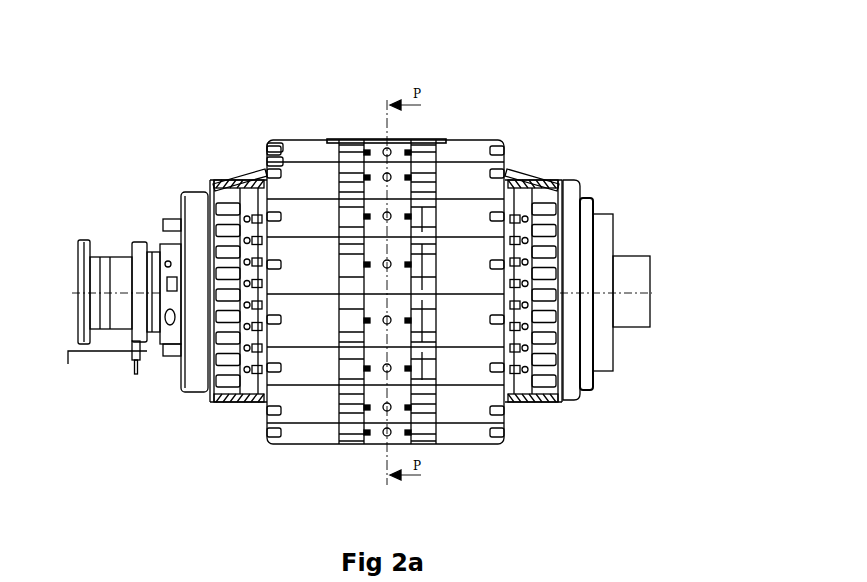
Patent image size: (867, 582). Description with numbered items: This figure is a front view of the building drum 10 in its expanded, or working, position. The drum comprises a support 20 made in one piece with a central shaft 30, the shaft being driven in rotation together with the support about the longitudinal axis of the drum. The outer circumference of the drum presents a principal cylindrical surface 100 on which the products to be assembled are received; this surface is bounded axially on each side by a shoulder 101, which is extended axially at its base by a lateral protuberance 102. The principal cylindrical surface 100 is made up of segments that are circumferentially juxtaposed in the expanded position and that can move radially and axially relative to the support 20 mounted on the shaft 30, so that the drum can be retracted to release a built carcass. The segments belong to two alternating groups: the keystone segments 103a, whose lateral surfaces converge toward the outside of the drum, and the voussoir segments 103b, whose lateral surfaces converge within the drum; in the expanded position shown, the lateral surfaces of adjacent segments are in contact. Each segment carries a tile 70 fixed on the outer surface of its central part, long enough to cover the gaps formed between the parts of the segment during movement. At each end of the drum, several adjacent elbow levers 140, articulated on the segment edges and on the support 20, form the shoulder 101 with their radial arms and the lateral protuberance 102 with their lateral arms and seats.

The building drum 10 is at (396, 271).
The support 20 is at (577, 380).
The central shaft 30 is at (638, 279).
The tile 70 is at (439, 140).
The principal cylindrical surface 100 is at (334, 271).
The shoulder 101 is at (267, 157).
The lateral protuberance 102 is at (263, 170).
The keystone segments 103a is at (292, 373).
The voussoir segments 103b is at (316, 322).
The elbow lever 140 is at (250, 210).